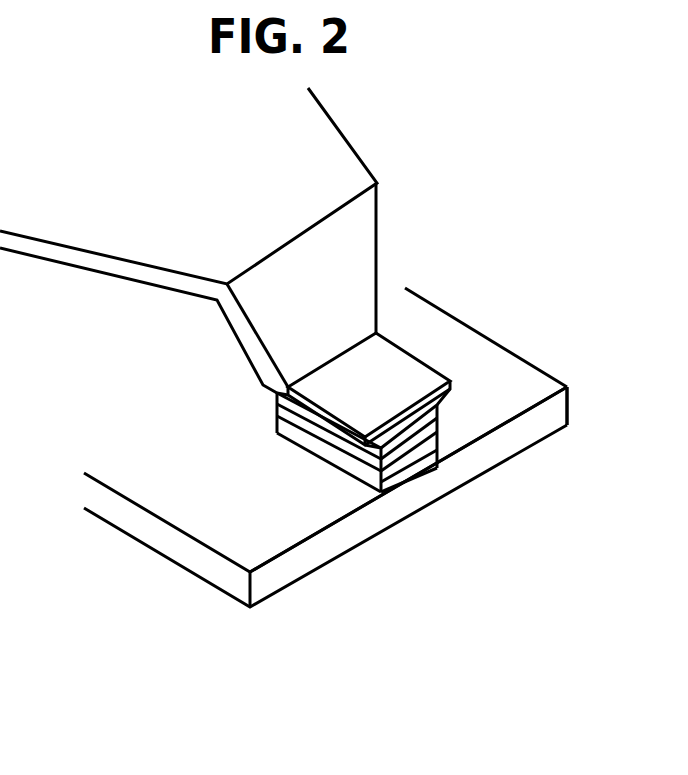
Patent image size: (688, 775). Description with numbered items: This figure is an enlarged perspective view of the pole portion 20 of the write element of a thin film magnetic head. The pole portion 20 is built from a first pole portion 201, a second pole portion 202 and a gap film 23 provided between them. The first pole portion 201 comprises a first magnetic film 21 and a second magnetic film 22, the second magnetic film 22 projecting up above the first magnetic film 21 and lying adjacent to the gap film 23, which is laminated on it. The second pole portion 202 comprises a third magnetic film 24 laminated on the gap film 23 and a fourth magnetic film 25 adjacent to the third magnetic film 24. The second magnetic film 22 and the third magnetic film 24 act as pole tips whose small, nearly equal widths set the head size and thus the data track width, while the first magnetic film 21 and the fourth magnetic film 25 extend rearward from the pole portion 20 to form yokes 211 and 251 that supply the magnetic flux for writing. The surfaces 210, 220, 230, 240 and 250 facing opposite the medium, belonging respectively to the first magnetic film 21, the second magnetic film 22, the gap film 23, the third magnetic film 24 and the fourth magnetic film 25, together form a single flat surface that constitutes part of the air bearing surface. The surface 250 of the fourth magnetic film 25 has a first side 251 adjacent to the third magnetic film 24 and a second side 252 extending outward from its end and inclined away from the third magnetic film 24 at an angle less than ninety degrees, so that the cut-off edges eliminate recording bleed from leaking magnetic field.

The pole portion 20 is at (383, 338).
The first magnetic film 21 is at (130, 523).
The second magnetic film 22 is at (293, 432).
The gap film 23 is at (275, 408).
The third magnetic film 24 is at (280, 395).
The fourth magnetic film 25 is at (385, 358).
The first pole portion 201 is at (373, 492).
The second pole portion 202 is at (436, 357).
The surface of the first magnetic film facing opposite the medium 210 is at (540, 428).
The yoke 211 is at (405, 288).
The surface of the second magnetic film facing opposite the medium 220 is at (437, 455).
The surface of the gap film facing opposite the medium 230 is at (407, 458).
The surface of the third magnetic film facing opposite the medium 240 is at (383, 455).
The surface of the fourth magnetic film facing opposite the medium 250 is at (442, 400).
The first side 251 is at (367, 479).
The second side 252 is at (437, 414).